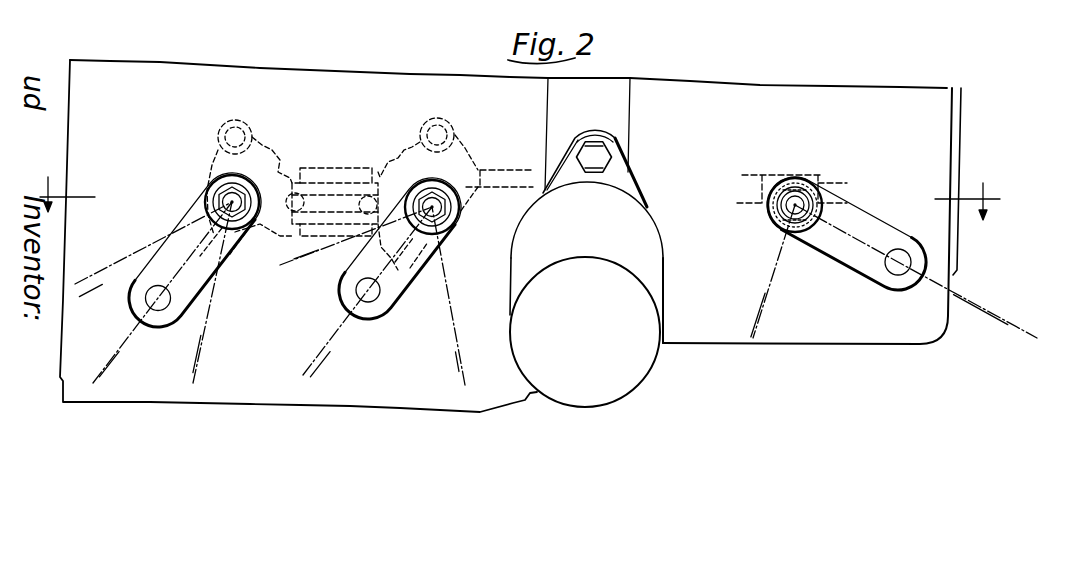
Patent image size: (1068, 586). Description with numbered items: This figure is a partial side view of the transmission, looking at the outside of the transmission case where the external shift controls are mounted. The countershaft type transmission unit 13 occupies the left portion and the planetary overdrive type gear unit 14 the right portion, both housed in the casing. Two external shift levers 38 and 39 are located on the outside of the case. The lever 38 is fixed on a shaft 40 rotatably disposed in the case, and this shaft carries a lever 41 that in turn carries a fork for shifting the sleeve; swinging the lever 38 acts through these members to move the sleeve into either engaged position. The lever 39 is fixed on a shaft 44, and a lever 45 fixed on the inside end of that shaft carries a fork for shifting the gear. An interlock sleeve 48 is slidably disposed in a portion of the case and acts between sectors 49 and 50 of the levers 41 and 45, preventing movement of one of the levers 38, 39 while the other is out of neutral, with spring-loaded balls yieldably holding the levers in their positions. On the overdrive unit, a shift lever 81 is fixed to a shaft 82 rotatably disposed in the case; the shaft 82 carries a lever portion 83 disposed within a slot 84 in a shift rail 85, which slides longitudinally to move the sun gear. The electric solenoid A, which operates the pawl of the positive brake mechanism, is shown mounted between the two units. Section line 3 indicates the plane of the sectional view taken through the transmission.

The countershaft type transmission unit 13 is at (356, 68).
The planetary overdrive type gear unit 14 is at (806, 83).
The lever 38 is at (217, 270).
The lever 39 is at (410, 277).
The shaft 40 is at (214, 197).
The lever 41 is at (217, 126).
The shaft 44 is at (446, 215).
The lever 45 is at (452, 122).
The interlock sleeve 48 is at (327, 161).
The sector 49 is at (270, 144).
The sector 50 is at (402, 153).
The shift lever 81 is at (882, 230).
The shaft 82 is at (790, 212).
The lever portion 83 is at (800, 175).
The slot 84 is at (799, 161).
The shift rail 85 is at (497, 169).
The electric solenoid A is at (636, 357).
The section line for FIG. 3 is at (520, 208).